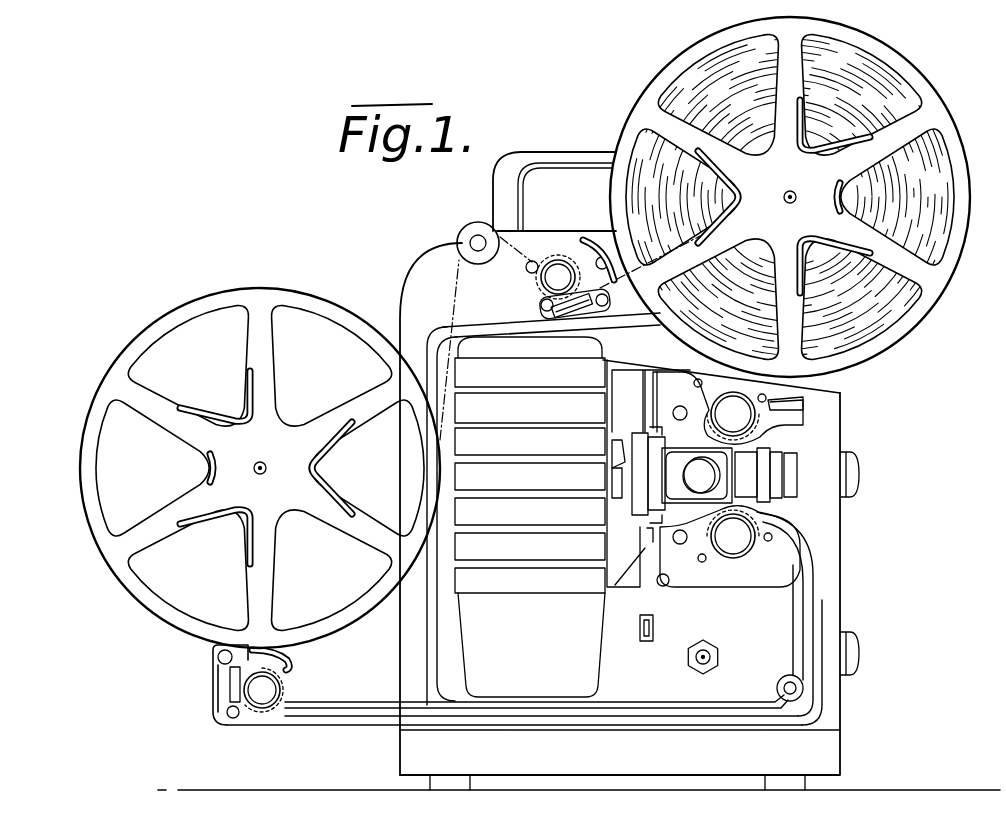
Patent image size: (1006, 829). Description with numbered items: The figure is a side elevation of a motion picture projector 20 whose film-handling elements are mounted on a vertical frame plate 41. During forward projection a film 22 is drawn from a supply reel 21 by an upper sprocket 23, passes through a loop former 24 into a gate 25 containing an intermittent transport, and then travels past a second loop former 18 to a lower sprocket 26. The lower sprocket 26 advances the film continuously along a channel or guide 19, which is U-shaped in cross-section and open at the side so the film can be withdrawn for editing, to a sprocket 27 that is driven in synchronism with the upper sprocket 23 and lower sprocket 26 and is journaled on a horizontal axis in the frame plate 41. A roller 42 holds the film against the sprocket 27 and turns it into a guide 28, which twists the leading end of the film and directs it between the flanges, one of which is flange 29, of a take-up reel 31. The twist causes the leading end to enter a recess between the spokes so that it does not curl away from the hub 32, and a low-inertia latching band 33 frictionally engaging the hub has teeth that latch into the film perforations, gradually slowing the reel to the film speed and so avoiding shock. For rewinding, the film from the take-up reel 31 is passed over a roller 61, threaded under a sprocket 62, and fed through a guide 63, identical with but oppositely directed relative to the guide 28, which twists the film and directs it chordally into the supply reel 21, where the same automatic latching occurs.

The loop former 18 is at (681, 565).
The channel or guide 19 is at (816, 603).
The motion picture projector 20 is at (862, 687).
The supply reel 21 is at (897, 336).
The film 22 is at (766, 406).
The upper sprocket 23 is at (755, 421).
The loop former 24 is at (612, 362).
The gate 25 is at (655, 477).
The lower sprocket 26 is at (737, 550).
The sprocket 27 is at (282, 684).
The guide 28 is at (224, 688).
The flange 29 is at (238, 468).
The take-up reel 31 is at (260, 468).
The hub 32 is at (332, 468).
The latching band 33 is at (211, 468).
The vertical frame plate 41 is at (360, 683).
The roller 42 is at (231, 719).
The roller 61 is at (466, 234).
The sprocket 62 is at (528, 288).
The guide 63 is at (592, 308).